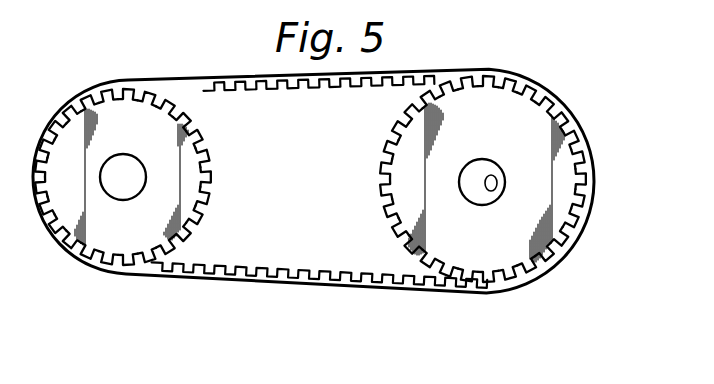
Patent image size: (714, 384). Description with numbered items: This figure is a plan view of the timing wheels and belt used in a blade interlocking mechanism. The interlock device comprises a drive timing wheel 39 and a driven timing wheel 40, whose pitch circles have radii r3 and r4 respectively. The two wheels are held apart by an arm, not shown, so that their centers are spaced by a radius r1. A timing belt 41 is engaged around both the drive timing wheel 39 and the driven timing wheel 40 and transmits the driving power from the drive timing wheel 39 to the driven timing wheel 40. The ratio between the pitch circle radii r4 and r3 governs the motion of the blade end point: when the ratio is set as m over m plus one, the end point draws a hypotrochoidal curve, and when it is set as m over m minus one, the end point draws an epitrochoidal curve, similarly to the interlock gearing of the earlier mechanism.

The drive timing wheel 39 is at (550, 212).
The driven timing wheel 40 is at (72, 258).
The timing belt 41 is at (383, 290).
The radius between the centers of the wheels r1 is at (124, 177).
The pitch circle radius of the drive timing wheel r3 is at (482, 182).
The pitch circle radius of the driven timing wheel r4 is at (123, 177).